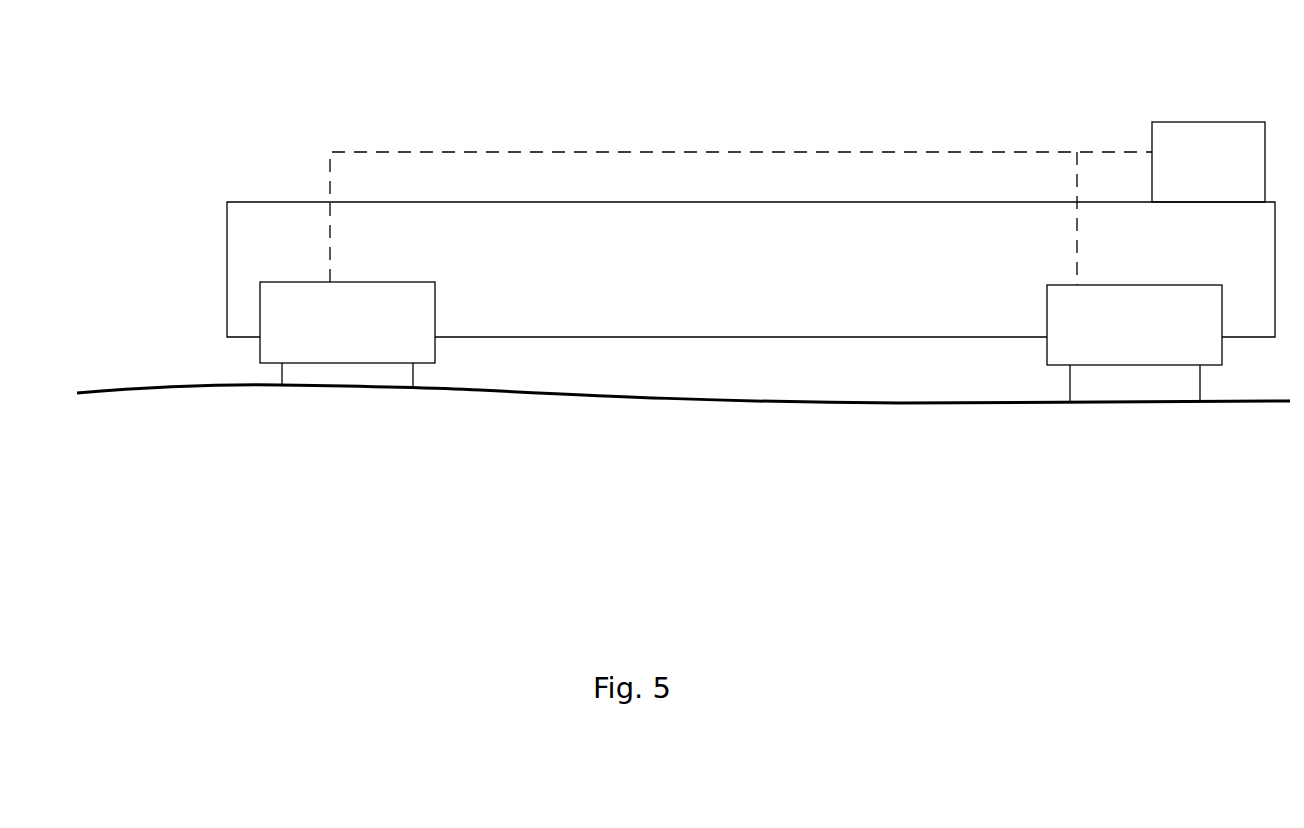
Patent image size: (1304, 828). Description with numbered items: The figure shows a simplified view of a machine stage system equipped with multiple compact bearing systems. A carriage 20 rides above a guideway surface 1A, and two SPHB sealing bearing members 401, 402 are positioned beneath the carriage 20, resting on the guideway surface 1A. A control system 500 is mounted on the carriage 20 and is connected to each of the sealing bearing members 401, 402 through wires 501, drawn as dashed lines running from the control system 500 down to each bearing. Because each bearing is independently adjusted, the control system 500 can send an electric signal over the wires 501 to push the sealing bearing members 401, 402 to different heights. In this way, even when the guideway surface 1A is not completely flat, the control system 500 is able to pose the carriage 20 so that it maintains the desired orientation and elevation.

The carriage 20 is at (217, 212).
The guideway surface 1A is at (140, 378).
The wires 501 is at (658, 147).
The control system 500 is at (1135, 138).
The sealing bearing member 401 is at (448, 352).
The sealing bearing member 402 is at (1042, 365).